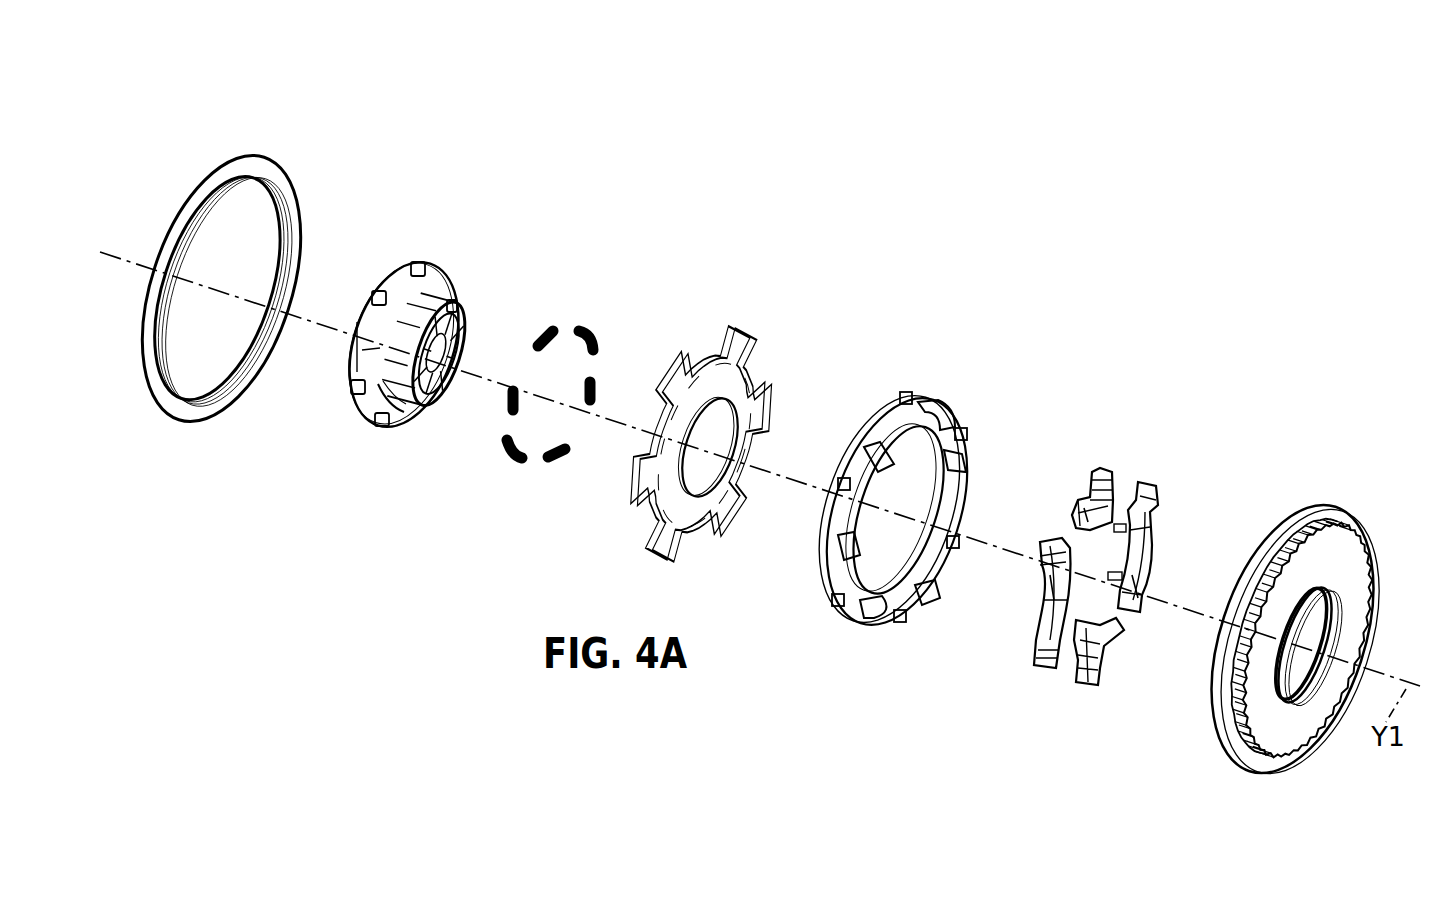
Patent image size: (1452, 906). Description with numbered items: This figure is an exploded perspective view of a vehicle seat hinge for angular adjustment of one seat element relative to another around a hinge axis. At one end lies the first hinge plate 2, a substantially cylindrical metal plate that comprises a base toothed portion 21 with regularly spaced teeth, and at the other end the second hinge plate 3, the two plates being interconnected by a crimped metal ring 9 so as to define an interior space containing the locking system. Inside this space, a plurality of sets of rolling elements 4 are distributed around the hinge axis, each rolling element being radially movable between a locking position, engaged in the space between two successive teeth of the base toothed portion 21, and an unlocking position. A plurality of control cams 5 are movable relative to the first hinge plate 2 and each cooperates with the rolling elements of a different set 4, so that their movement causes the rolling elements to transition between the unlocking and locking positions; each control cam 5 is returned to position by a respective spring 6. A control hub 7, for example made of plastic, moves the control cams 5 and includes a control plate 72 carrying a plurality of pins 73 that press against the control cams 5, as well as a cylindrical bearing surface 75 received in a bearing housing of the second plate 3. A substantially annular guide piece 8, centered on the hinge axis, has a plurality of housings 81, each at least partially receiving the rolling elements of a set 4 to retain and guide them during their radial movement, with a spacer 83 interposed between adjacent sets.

The crimped metal ring 9 is at (300, 132).
The control hub 7 is at (390, 325).
The pins 73 is at (418, 262).
The control plate 72 is at (355, 356).
The cylindrical bearing surface 75 is at (408, 412).
The spring 6 is at (545, 320).
The second hinge plate 3 is at (760, 318).
The guide piece 8 is at (906, 507).
The housings 81 is at (906, 395).
The spacer 83 is at (938, 404).
The sets of rolling elements 4 is at (1095, 462).
The control cams 5 is at (1072, 510).
The first hinge plate 2 is at (1311, 600).
The base toothed portion 21 is at (1362, 525).